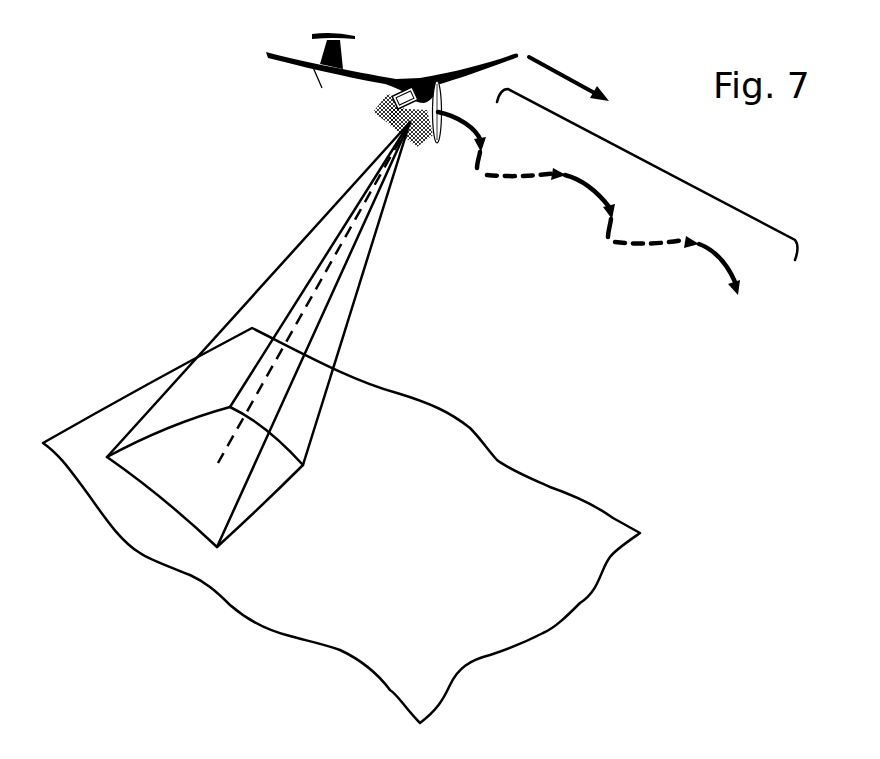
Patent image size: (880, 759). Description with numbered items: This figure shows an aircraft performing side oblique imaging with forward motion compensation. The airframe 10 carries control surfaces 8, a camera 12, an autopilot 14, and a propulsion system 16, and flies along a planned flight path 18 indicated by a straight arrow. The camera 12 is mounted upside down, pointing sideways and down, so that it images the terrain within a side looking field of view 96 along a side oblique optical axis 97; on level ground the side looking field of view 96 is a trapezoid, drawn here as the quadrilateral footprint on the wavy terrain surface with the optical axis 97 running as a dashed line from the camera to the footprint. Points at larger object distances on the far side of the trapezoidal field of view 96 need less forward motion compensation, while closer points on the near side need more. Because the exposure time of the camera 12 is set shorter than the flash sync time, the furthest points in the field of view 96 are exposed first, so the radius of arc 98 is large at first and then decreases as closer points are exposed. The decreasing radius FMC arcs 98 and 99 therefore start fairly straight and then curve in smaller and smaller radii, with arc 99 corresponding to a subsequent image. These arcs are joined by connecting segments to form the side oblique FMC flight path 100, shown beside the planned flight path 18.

The control surfaces 8 is at (320, 53).
The airframe 10 is at (392, 85).
The camera 12 is at (377, 131).
The autopilot 14 is at (394, 82).
The propulsion system 16 is at (447, 67).
The planned flight path 18 is at (573, 77).
The side looking field of view 96 is at (174, 477).
The side oblique optical axis 97 is at (236, 327).
The decreasing radius FMC arc 98 is at (502, 146).
The decreasing radius FMC arc 99 is at (652, 232).
The side oblique FMC flight path 100 is at (647, 174).